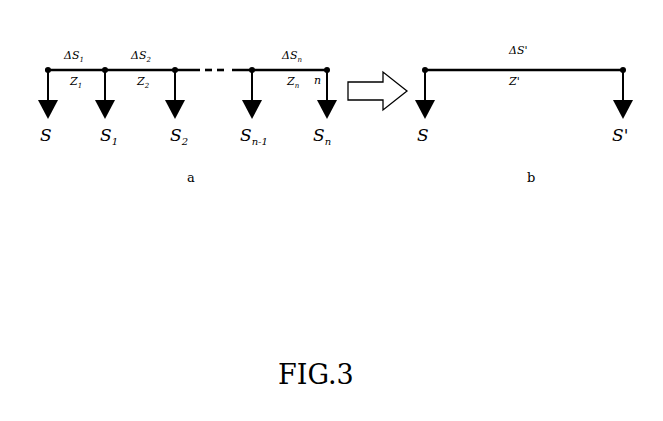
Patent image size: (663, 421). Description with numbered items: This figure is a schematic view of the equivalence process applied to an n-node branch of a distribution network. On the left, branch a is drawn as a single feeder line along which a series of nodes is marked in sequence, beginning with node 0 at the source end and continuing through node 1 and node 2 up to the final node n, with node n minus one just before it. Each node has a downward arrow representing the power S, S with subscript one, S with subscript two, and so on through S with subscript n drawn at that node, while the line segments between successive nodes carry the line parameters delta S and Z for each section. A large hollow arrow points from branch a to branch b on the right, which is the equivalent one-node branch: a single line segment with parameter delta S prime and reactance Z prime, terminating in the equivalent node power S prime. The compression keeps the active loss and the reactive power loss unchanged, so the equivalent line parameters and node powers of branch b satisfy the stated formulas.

The node 0 is at (46, 94).
The node 1 is at (104, 94).
The node 2 is at (174, 94).